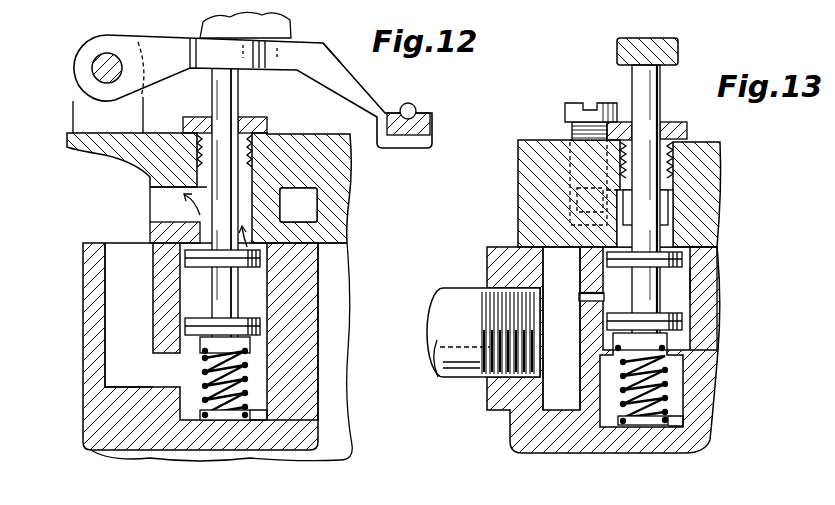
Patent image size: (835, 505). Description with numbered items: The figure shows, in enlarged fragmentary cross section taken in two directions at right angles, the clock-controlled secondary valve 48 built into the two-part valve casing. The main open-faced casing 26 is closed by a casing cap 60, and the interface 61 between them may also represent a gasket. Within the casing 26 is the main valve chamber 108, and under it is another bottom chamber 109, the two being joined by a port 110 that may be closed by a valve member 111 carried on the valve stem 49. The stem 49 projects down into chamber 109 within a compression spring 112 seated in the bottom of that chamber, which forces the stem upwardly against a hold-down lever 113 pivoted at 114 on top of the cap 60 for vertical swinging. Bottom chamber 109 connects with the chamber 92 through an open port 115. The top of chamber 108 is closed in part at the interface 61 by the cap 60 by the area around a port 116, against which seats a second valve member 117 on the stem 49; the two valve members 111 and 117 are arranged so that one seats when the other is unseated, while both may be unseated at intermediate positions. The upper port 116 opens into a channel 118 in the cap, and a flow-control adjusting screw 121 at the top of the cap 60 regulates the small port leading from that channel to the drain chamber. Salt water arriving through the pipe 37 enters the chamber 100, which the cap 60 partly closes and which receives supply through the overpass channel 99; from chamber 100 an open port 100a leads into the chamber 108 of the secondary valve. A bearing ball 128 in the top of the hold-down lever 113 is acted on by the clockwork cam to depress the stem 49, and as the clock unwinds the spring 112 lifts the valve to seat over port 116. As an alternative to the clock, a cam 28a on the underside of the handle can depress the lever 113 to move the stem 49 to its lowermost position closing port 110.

In FIG. 12, the main open-faced casing 26 is at (81, 295).
In FIG. 13, the main open-faced casing 26 is at (508, 430).
In FIG. 12, the cam 28a is at (204, 24).
In FIG. 13, the pipe 37 is at (450, 378).
In FIG. 13, the secondary valve 48 is at (677, 279).
In FIG. 12, the valve stem 49 is at (234, 97).
In FIG. 13, the valve stem 49 is at (670, 207).
In FIG. 12, the casing cap 60 is at (352, 180).
In FIG. 13, the casing cap 60 is at (516, 170).
In FIG. 12, the interface 61 is at (348, 243).
In FIG. 13, the interface 61 is at (718, 244).
In FIG. 12, the chamber 92 is at (140, 311).
In FIG. 12, the channel 99 is at (306, 208).
In FIG. 13, the chamber 100 is at (576, 297).
In FIG. 13, the open port 100a is at (575, 330).
In FIG. 12, the main valve chamber 108 is at (263, 308).
In FIG. 13, the main valve chamber 108 is at (683, 298).
In FIG. 12, the bottom chamber 109 is at (257, 417).
In FIG. 13, the bottom chamber 109 is at (678, 420).
In FIG. 12, the port 110 is at (258, 350).
In FIG. 13, the port 110 is at (673, 350).
In FIG. 12, the valve member 111 is at (190, 326).
In FIG. 13, the valve member 111 is at (684, 323).
In FIG. 12, the compression spring 112 is at (198, 413).
In FIG. 13, the compression spring 112 is at (617, 423).
In FIG. 12, the hold-down lever 113 is at (325, 40).
In FIG. 13, the hold-down lever 113 is at (680, 50).
In FIG. 12, the pivot 114 is at (92, 70).
In FIG. 12, the open port 115 is at (183, 380).
In FIG. 13, the open port 115 is at (673, 385).
In FIG. 12, the port 116 is at (196, 230).
In FIG. 13, the port 116 is at (668, 233).
In FIG. 12, the second valve member 117 is at (262, 255).
In FIG. 13, the second valve member 117 is at (684, 256).
In FIG. 12, the channel 118 is at (163, 200).
In FIG. 13, the flow-control adjusting screw 121 is at (565, 110).
In FIG. 12, the bearing ball 128 is at (417, 108).